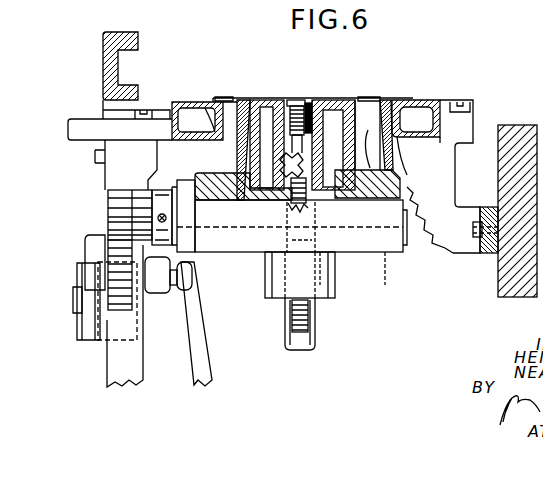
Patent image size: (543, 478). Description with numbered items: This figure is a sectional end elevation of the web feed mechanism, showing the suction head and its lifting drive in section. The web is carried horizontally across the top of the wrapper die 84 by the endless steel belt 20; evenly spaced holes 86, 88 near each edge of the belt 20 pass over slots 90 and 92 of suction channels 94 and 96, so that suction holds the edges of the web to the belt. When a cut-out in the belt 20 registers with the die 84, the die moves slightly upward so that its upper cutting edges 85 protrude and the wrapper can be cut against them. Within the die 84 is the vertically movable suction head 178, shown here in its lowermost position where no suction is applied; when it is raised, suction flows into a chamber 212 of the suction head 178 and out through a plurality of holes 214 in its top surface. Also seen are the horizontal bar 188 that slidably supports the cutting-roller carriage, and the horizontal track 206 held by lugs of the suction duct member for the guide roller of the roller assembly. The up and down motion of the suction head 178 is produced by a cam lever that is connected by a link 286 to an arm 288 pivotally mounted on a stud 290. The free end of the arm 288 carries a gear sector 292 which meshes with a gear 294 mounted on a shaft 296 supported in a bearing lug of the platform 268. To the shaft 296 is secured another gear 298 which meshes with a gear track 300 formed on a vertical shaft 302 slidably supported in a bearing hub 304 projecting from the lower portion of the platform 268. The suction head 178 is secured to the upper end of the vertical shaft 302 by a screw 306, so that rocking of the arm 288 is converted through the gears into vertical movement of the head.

The endless steel belt 20 is at (247, 100).
The wrapper die 84 is at (398, 142).
The upper cutting edges 85 is at (243, 135).
The holes 86 is at (223, 100).
The holes 88 is at (389, 100).
The slot 90 is at (193, 121).
The slot 92 is at (412, 121).
The suction channel 94 is at (176, 102).
The suction channel 96 is at (425, 100).
The suction head 178 is at (297, 100).
The horizontal bar 188 is at (532, 112).
The horizontal track 206 is at (138, 44).
The chamber 212 is at (366, 150).
The holes 214 is at (262, 108).
The platform 268 is at (405, 196).
The link 286 is at (207, 337).
The arm 288 is at (80, 318).
The stud 290 is at (75, 302).
The gear sector 292 is at (120, 313).
The gear 294 is at (106, 196).
The shaft 296 is at (106, 218).
The gear 298 is at (333, 254).
The gear track 300 is at (300, 182).
The vertical shaft 302 is at (288, 170).
The bearing hub 304 is at (278, 274).
The screw 306 is at (310, 100).